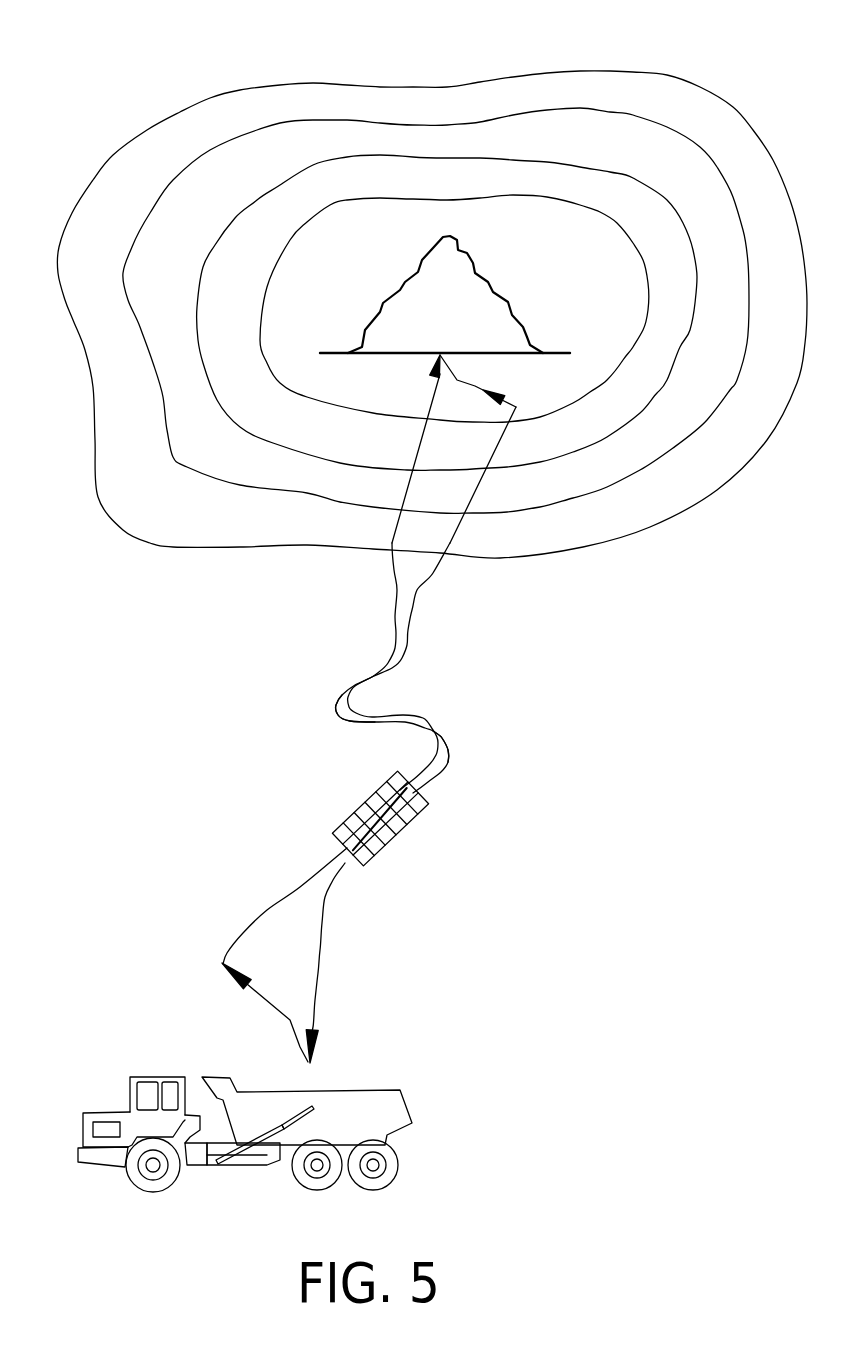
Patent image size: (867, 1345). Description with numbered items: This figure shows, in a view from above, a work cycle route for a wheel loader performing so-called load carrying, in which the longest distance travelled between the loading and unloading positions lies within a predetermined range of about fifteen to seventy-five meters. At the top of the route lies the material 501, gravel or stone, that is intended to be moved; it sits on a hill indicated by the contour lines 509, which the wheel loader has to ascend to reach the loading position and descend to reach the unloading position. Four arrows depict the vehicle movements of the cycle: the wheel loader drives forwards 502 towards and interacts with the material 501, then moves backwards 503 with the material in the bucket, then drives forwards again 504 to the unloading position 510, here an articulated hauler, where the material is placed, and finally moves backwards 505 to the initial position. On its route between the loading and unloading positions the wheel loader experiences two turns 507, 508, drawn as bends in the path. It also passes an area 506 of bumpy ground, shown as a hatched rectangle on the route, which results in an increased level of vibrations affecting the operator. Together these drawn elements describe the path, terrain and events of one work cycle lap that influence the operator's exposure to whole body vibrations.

The material 501 is at (480, 290).
The forwards movement 502 is at (395, 633).
The backwards movement 503 is at (470, 383).
The forwards movement 504 is at (411, 629).
The backwards movement 505 is at (302, 1042).
The area of bumpy ground 506 is at (400, 827).
The turn 507 is at (337, 720).
The turn 508 is at (450, 752).
The contour lines 509 is at (187, 467).
The unloading position 510 is at (365, 1103).